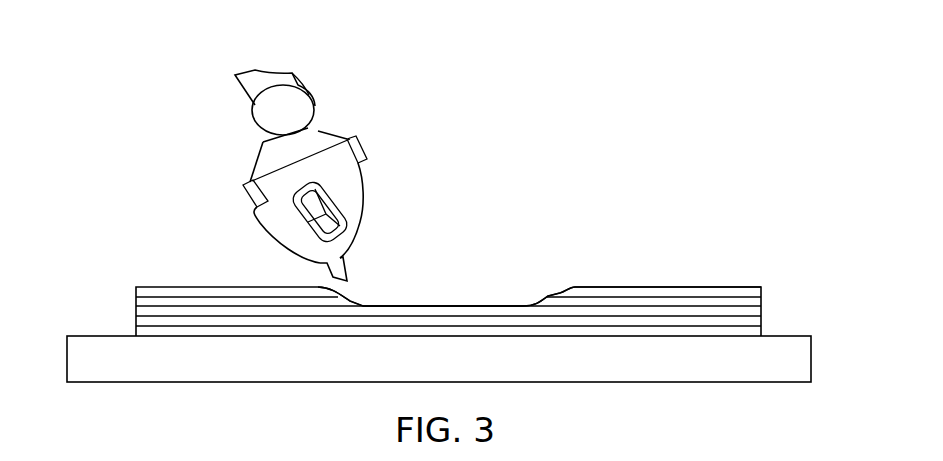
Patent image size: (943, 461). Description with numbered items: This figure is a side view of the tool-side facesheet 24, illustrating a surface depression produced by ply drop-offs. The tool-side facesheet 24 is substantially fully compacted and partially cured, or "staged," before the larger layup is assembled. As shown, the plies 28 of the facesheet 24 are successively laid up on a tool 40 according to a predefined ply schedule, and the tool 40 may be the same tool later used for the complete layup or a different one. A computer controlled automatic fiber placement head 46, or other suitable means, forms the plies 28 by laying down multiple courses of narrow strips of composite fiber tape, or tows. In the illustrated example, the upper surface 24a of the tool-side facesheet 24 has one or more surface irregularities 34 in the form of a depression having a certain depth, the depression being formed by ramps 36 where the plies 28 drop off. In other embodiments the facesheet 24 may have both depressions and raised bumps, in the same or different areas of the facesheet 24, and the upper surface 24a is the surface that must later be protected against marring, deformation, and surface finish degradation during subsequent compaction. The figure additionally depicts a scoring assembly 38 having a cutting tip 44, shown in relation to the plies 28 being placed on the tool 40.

The tool-side facesheet 24 is at (245, 310).
The upper surface 24a is at (722, 284).
The plies 28 is at (668, 296).
The surface irregularities 34 is at (485, 299).
The ramps 36 is at (358, 299).
The scoring assembly 38 is at (125, 268).
The tool 40 is at (102, 352).
The cutting tip 44 is at (312, 286).
The automatic fiber placement head 46 is at (331, 160).